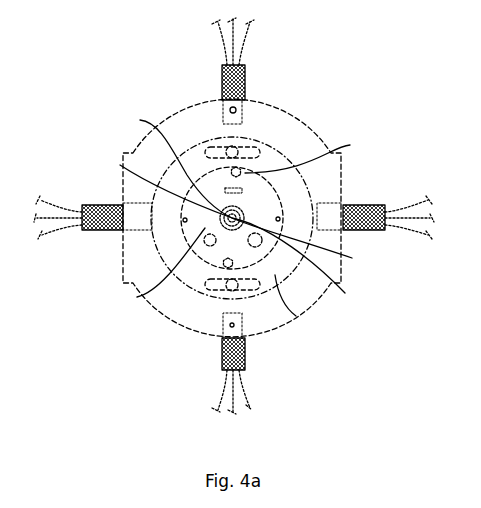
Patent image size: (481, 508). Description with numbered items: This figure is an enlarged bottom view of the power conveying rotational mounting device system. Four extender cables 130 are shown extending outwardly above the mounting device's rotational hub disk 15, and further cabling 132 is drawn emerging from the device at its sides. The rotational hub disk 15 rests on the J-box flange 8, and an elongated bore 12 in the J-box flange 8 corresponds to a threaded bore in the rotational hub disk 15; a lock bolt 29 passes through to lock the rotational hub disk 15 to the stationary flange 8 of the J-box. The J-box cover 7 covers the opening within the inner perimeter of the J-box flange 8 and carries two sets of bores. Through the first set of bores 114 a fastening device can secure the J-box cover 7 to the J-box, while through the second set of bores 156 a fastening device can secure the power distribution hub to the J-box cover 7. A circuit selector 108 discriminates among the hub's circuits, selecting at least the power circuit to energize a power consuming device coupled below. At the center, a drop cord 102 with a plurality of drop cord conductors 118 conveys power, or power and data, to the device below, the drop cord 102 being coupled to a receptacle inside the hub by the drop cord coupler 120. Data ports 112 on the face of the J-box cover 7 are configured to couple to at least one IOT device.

The J-box cover 7 is at (352, 259).
The J-box flange 8 is at (296, 316).
The elongated bore 12 is at (252, 150).
The rotational hub disk 15 is at (293, 141).
The lock bolt 29 is at (236, 292).
The drop cord 102 is at (345, 293).
The circuit selector 108 is at (140, 120).
The data ports 112 is at (208, 247).
The first set of bores 114 is at (350, 145).
The drop cord conductors 118 is at (341, 291).
The drop cord coupler 120 is at (120, 165).
The extender cables 130 is at (222, 350).
The cable 132 is at (228, 52).
The second set of bores 156 is at (137, 297).